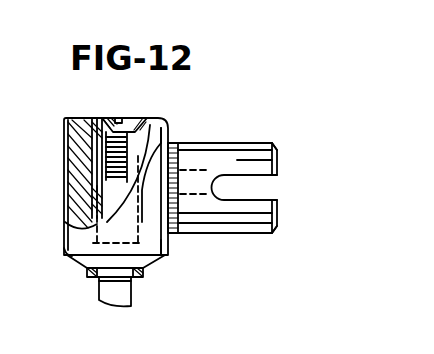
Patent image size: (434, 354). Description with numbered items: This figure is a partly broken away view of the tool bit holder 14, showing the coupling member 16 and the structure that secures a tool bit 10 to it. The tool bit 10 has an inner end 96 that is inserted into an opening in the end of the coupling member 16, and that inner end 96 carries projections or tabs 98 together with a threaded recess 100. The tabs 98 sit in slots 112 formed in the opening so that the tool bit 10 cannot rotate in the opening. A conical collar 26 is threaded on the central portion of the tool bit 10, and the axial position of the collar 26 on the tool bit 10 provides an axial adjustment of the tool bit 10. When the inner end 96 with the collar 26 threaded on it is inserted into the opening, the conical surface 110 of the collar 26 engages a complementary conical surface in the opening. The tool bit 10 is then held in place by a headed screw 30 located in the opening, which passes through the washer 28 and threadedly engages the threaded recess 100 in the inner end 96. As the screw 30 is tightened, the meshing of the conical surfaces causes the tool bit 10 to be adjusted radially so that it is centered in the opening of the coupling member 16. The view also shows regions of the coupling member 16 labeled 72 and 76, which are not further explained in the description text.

The tool bit 10 is at (98, 291).
The tool bit holder 14 is at (62, 118).
The coupling member 16 is at (255, 143).
The collar 26 is at (142, 270).
The washer 28 is at (108, 205).
The screw 30 is at (98, 154).
The end wall 72 is at (280, 160).
The slot 76 is at (258, 176).
The inner end 96 is at (172, 136).
The projections 98 is at (205, 174).
The threaded recess 100 is at (166, 250).
The conical surface 110 is at (63, 252).
The slots 112 is at (95, 171).